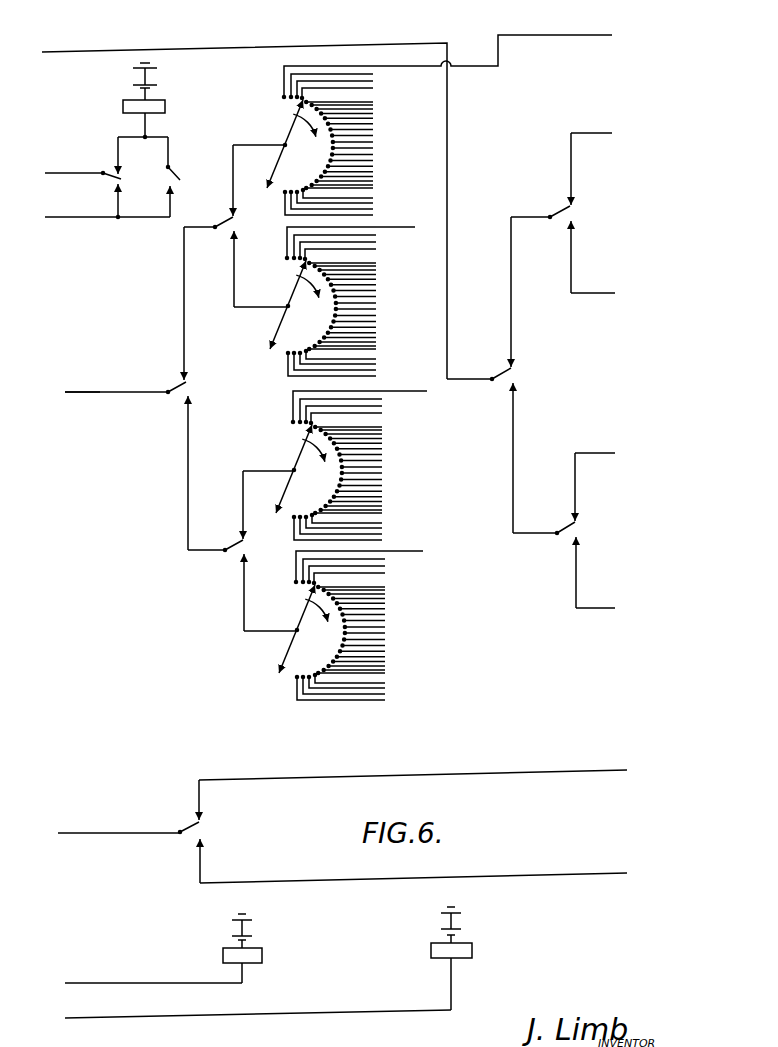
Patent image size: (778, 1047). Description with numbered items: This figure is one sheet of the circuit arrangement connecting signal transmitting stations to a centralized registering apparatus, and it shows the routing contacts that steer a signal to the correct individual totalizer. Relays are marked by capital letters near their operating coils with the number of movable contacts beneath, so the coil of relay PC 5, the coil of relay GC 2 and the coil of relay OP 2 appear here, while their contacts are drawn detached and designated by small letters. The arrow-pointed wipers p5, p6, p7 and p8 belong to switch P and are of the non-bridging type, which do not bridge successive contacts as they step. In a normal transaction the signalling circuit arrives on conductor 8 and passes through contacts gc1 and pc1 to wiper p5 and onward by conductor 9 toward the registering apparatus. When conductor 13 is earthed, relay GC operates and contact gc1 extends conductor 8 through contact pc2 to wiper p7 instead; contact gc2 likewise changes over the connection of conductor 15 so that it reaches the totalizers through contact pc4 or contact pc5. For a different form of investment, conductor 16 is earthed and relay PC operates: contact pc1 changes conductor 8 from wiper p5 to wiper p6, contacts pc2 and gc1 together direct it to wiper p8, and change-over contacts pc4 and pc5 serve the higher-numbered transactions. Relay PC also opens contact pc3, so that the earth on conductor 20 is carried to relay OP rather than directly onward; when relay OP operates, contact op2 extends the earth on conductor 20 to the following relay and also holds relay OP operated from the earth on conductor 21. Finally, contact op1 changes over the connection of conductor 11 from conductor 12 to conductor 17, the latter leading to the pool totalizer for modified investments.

The conductor 15 is at (244, 204).
The conductor 9 is at (492, 50).
The conductor 20 is at (74, 162).
The conductor 21 is at (107, 231).
The conductor 8 is at (78, 388).
The conductor 11 is at (119, 823).
The conductor 12 is at (414, 765).
The conductor 17 is at (415, 867).
The conductor 16 is at (153, 975).
The conductor 13 is at (258, 1009).
The relay OP OP2 is at (192, 106).
The contact of relay PC pc3 is at (116, 177).
The contact of relay OP op2 is at (195, 177).
The contact of relay PC pc1 is at (236, 226).
The contact of relay PC pc2 is at (242, 551).
The contact of relay GC gc1 is at (151, 388).
The contact of relay GC gc2 is at (505, 375).
The contact of relay PC pc4 is at (563, 213).
The contact of relay PC pc5 is at (564, 530).
The contact of relay OP op1 is at (219, 831).
The wiper of switch P p5 is at (320, 140).
The wiper of switch P p6 is at (342, 301).
The wiper of switch P p7 is at (351, 465).
The wiper of switch P p8 is at (351, 625).
The relay PC PC5 is at (297, 954).
The relay GC GC2 is at (427, 954).